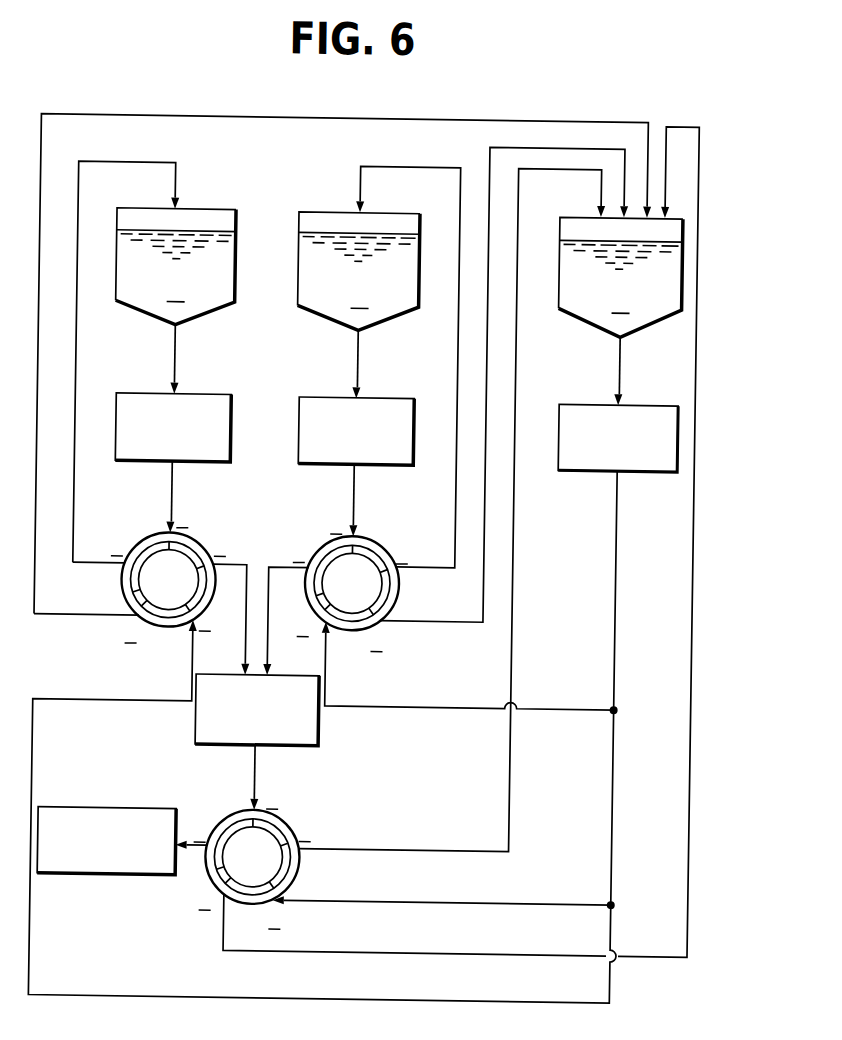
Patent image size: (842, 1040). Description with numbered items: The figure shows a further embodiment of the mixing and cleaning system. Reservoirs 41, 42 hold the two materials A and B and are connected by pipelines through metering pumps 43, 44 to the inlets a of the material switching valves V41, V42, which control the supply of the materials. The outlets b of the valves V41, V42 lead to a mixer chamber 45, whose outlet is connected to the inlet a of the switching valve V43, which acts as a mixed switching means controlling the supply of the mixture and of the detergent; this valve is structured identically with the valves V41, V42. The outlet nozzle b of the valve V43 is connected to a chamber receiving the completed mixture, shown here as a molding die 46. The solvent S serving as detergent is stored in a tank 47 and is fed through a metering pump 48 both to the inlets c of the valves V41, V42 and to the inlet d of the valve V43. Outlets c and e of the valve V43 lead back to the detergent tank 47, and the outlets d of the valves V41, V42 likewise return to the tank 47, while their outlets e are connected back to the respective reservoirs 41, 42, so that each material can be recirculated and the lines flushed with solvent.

The reservoir for material A 41 is at (202, 227).
The reservoir for material B 42 is at (337, 218).
The metering pump 43 is at (186, 397).
The metering pump 44 is at (344, 399).
The mixer chamber 45 is at (322, 727).
The molding die 46 is at (102, 810).
The detergent tank 47 is at (570, 224).
The metering pump 48 is at (605, 402).
The material switching valve V41 is at (168, 567).
The material switching valve V42 is at (349, 573).
The mixed switching valve V43 is at (251, 854).